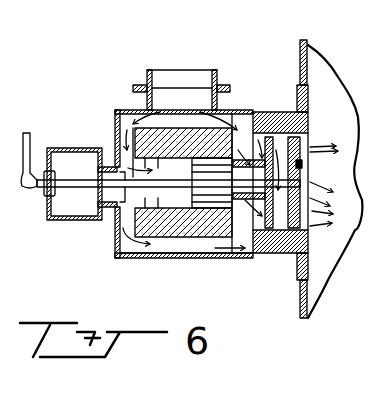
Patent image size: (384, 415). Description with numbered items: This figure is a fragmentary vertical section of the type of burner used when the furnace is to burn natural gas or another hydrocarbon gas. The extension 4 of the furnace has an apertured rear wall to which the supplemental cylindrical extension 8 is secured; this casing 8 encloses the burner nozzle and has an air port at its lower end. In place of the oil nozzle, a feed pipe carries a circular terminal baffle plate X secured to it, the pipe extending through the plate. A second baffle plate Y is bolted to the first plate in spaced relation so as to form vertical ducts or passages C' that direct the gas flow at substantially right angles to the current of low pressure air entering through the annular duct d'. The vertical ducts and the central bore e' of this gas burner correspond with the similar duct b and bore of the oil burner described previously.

The duct b is at (118, 127).
The annular duct d' is at (181, 70).
The supplemental cylindrical extension 8 is at (82, 226).
The central bore e' is at (199, 206).
The vertical ducts or passages C' is at (280, 152).
The baffle plate X is at (272, 258).
The second baffle plate Y is at (305, 242).
The extension 4 is at (147, 257).